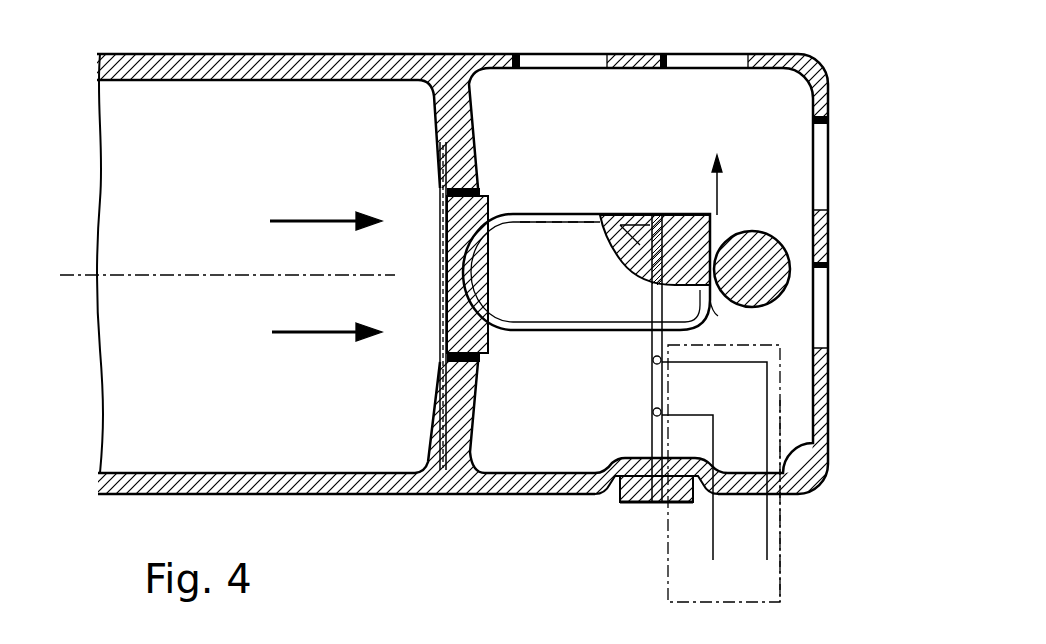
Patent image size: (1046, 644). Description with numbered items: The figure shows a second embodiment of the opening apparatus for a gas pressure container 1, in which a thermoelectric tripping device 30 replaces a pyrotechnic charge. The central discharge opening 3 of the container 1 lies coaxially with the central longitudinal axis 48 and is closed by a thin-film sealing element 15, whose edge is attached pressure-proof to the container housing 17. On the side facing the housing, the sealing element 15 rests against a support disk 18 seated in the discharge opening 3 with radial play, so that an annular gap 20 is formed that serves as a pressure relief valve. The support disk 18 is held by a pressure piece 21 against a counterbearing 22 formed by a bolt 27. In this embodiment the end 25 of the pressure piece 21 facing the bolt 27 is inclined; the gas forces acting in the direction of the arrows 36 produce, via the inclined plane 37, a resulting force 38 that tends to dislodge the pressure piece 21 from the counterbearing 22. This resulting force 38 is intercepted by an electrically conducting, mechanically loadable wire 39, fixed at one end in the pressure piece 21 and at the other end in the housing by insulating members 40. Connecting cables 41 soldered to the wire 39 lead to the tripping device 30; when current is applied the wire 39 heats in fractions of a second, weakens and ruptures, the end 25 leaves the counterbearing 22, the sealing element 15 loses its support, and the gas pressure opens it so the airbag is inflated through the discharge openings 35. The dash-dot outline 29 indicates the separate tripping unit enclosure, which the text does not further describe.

The pressure container 1 is at (138, 415).
The central discharge opening 3 is at (437, 343).
The sealing element 15 is at (446, 250).
The container housing 17 is at (138, 490).
The support disk 18 is at (446, 222).
The annular gap 20 is at (485, 362).
The pressure piece 21 is at (537, 240).
The counterbearing 22 is at (785, 242).
The end of the pressure piece 25 is at (722, 228).
The bolt 27 is at (770, 292).
The actuator housing 29 is at (782, 562).
The thermoelectric tripping device 30 is at (770, 515).
The discharge openings 35 is at (692, 60).
The force direction arrows 36 is at (290, 220).
The inclined plane 37 is at (712, 312).
The resulting force 38 is at (717, 196).
The wire 39 is at (652, 350).
The insulating member 40 is at (634, 220).
The connecting cables 41 is at (730, 548).
The central longitudinal axis 48 is at (85, 275).